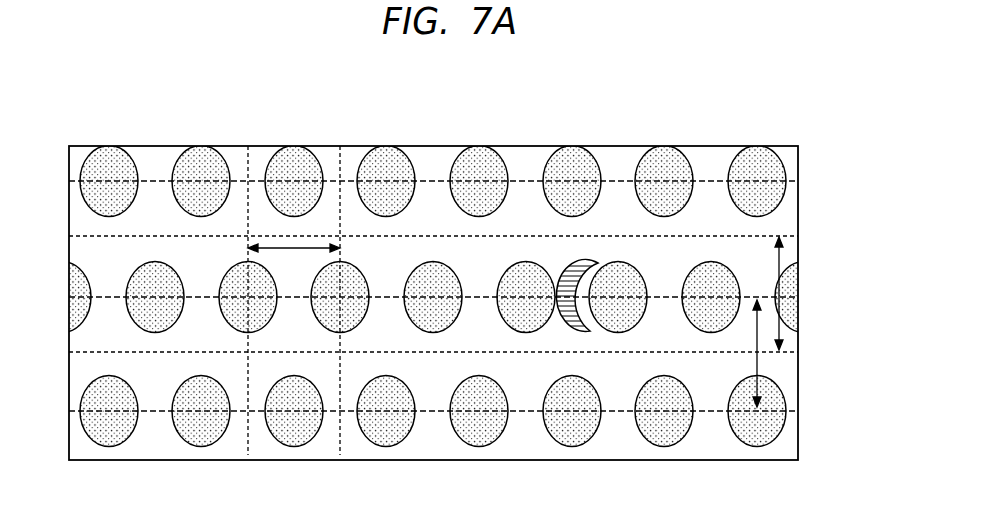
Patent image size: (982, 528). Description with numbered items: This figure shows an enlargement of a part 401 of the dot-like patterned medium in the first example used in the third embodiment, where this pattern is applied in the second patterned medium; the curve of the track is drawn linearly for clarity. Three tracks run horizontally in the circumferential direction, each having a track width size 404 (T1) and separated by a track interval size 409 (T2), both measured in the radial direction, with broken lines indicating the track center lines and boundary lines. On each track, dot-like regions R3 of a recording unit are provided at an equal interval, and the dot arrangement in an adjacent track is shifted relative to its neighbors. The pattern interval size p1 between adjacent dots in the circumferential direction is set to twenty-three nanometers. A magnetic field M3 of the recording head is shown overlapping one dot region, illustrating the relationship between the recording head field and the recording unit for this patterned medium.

The part of the dot-like patterned medium 401 is at (70, 146).
The pattern interval size p1 is at (295, 245).
The dot region of a recording unit R3 is at (428, 325).
The magnetic field of a recording head M3 is at (585, 332).
The track width size 404 is at (780, 258).
The track interval size 409 is at (757, 368).